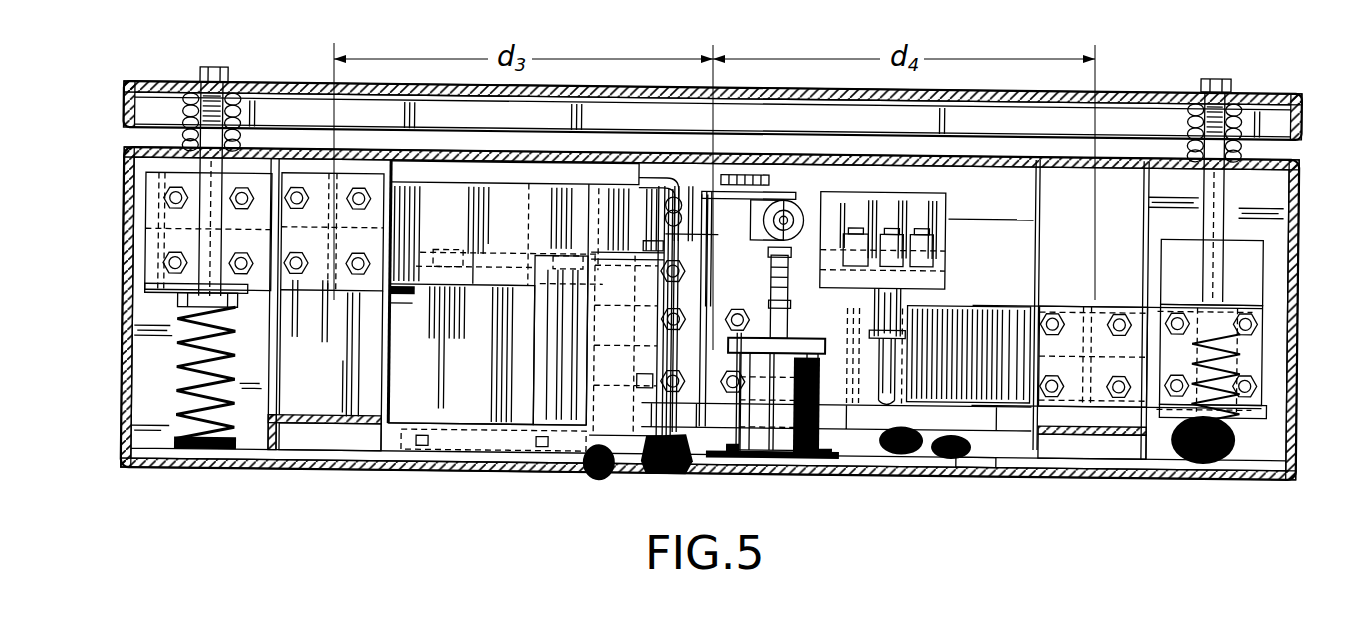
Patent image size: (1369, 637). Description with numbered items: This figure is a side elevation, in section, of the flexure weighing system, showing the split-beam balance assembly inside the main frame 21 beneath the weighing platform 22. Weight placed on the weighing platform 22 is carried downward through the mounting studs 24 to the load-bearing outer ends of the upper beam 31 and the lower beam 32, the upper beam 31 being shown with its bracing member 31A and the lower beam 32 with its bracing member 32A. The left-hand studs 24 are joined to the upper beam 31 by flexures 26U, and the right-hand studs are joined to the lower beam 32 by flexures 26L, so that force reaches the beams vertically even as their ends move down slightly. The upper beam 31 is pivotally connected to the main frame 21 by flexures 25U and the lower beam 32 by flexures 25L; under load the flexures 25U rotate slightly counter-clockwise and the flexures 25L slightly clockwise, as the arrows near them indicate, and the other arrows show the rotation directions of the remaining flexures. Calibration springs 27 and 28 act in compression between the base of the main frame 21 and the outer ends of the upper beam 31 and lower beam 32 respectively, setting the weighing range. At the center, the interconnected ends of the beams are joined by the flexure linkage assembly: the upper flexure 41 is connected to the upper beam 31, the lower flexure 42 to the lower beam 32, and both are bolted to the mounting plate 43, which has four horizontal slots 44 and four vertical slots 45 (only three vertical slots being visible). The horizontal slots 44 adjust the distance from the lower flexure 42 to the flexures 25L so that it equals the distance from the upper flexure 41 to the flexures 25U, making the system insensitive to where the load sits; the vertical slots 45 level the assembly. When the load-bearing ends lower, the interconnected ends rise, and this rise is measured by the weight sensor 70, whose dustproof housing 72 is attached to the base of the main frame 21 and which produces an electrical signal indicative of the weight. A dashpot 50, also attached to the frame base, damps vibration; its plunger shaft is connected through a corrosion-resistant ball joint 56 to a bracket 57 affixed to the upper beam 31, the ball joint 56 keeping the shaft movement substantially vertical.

The main frame 21 is at (127, 280).
The weighing platform 22 is at (150, 82).
The mounting studs 24 is at (200, 90).
The flexures 25U is at (312, 275).
The flexures 25L is at (1105, 305).
The flexures 26U is at (157, 283).
The flexures 26L is at (1175, 365).
The calibration spring 27 is at (182, 363).
The calibration spring 28 is at (1180, 428).
The upper beam 31 is at (488, 283).
The bracing member 31A is at (627, 217).
The lower beam 32 is at (1003, 403).
The bracing member 32A is at (975, 484).
The upper flexure 41 is at (800, 247).
The lower flexure 42 is at (650, 375).
The mounting plate 43 is at (605, 472).
The horizontal slots 44 is at (663, 347).
The vertical slots 45 is at (642, 179).
The dashpot 50 is at (800, 332).
The ball joint 56 is at (790, 215).
The bracket 57 is at (770, 198).
The weight sensor 70 is at (925, 320).
The dustproof housing 72 is at (900, 466).